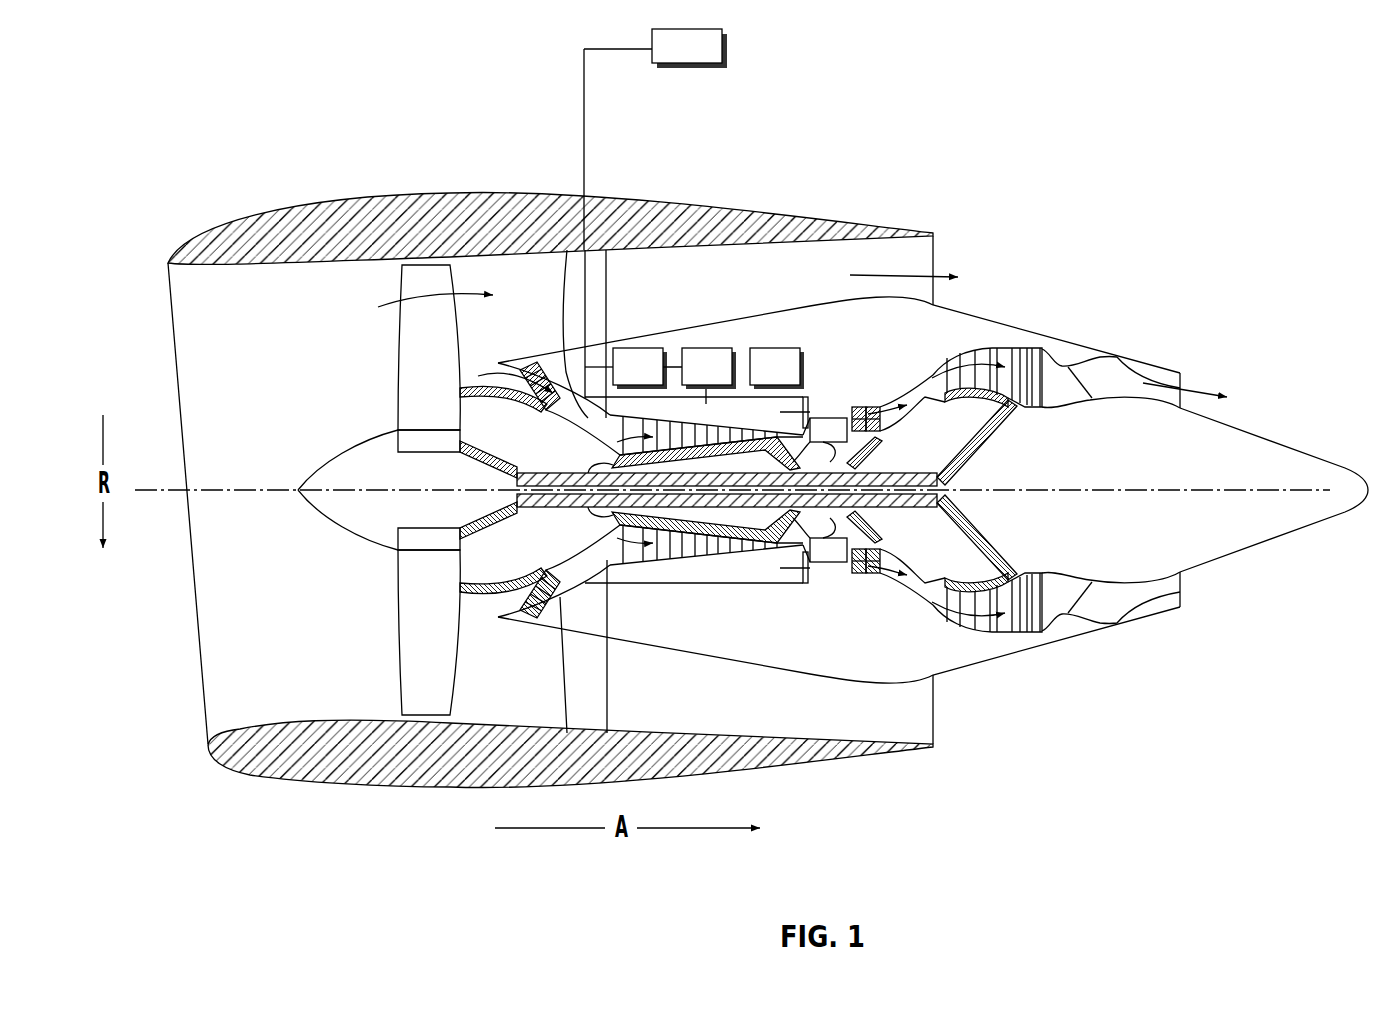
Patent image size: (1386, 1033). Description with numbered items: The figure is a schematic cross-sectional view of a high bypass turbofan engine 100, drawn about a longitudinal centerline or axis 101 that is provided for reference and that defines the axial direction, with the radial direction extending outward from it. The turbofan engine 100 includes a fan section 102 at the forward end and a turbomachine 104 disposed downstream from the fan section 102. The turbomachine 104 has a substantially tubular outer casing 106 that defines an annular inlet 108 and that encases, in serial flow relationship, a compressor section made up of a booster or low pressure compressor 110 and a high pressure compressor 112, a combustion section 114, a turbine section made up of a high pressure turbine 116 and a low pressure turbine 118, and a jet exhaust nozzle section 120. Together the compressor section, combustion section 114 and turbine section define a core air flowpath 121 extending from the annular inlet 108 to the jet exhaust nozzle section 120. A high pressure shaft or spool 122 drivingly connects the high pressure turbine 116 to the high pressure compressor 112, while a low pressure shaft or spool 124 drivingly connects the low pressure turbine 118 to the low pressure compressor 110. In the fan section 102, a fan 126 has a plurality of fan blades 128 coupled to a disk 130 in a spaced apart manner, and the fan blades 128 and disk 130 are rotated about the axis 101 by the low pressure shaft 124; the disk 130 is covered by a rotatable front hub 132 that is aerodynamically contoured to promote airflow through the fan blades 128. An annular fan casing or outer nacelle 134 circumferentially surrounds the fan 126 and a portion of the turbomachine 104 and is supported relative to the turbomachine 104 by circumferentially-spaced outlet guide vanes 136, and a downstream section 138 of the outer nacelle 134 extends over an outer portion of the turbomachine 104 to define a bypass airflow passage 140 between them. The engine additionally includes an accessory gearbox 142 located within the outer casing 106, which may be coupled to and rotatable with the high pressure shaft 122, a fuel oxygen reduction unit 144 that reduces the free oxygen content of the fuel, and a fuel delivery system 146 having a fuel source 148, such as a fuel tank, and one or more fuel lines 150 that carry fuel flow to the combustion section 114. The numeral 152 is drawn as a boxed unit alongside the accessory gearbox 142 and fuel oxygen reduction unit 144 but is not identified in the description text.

The turbofan engine 100 is at (1092, 205).
The longitudinal centerline or axis 101 is at (1127, 490).
The fan section 102 is at (362, 290).
The turbomachine 104 is at (763, 277).
The outer casing 106 is at (762, 670).
The annular inlet 108 is at (510, 605).
The low pressure (LP) compressor 110 is at (550, 627).
The high pressure (HP) compressor 112 is at (642, 557).
The combustion section 114 is at (823, 562).
The high pressure (HP) turbine 116 is at (890, 567).
The low pressure (LP) turbine 118 is at (1013, 640).
The jet exhaust nozzle section 120 is at (1080, 608).
The core air flowpath 121 is at (592, 578).
The high pressure (HP) shaft or spool 122 is at (830, 460).
The low pressure (LP) shaft or spool 124 is at (897, 467).
The fan 126 is at (355, 378).
The fan blades 128 is at (398, 637).
The disk 130 is at (402, 443).
The front hub 132 is at (347, 533).
The outer nacelle 134 is at (432, 787).
The outlet guide vanes 136 is at (607, 297).
The downstream section 138 is at (877, 225).
The bypass airflow passage 140 is at (828, 278).
The accessory gearbox 142 is at (792, 380).
The fuel oxygen reduction unit 144 is at (724, 380).
The fuel delivery system 146 is at (596, 137).
The fuel source 148 is at (706, 60).
The fuel lines 150 is at (585, 133).
The sensor 152 is at (654, 380).